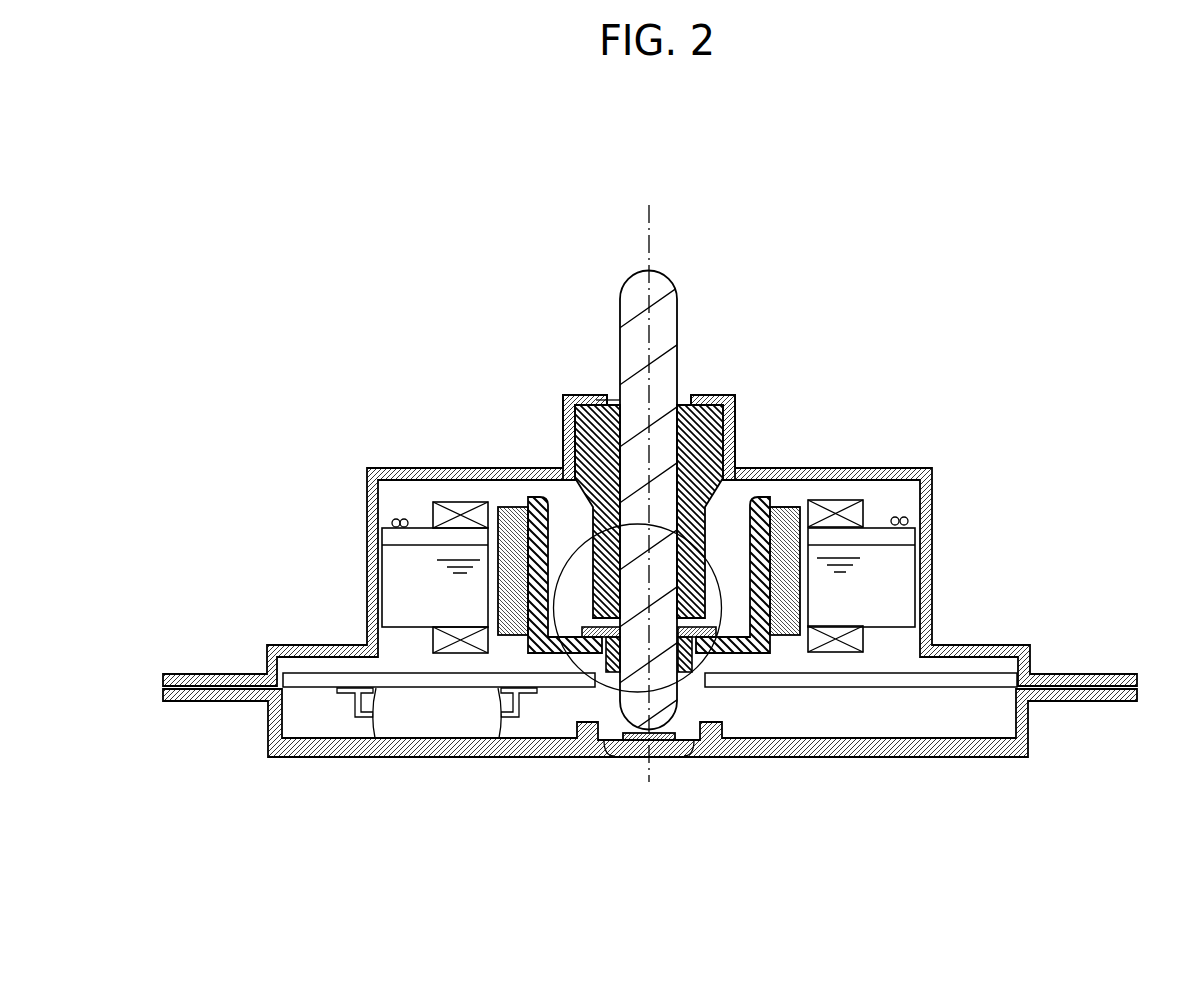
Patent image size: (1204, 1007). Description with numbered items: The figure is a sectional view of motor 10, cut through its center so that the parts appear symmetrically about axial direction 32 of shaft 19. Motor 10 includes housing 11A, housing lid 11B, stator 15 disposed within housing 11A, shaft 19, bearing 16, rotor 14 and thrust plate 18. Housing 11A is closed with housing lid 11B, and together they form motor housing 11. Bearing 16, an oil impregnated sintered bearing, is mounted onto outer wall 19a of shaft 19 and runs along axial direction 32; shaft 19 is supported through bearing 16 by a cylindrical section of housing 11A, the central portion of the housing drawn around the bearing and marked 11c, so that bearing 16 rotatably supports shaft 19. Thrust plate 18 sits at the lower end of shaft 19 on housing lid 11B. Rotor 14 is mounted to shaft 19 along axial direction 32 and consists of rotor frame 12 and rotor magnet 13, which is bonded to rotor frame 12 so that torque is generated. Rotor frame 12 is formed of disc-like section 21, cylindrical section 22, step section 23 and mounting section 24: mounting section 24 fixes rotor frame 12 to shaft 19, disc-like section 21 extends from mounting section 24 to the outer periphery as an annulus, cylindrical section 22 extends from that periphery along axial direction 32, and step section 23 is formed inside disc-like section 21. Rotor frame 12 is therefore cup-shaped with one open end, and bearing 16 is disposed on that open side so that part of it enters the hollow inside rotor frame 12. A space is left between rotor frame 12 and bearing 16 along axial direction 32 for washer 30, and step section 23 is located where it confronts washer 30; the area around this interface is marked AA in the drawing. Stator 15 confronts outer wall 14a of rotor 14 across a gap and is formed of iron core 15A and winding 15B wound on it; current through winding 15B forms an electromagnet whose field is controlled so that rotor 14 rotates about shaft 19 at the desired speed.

The motor 10 is at (298, 630).
The motor housing 11 is at (1147, 562).
The housing 11A is at (1023, 642).
The housing lid 11B is at (1103, 697).
The bearing holder portion 11c is at (735, 442).
The rotor frame 12 is at (757, 652).
The rotor magnet 13 is at (788, 625).
The rotor 14 is at (782, 815).
The outer wall of rotor 14a is at (802, 520).
The stator 15 is at (272, 378).
The iron core 15A is at (392, 550).
The winding 15B is at (478, 518).
The bearing 16 is at (568, 400).
The thrust plate 18 is at (658, 740).
The shaft 19 is at (627, 305).
The outer wall of shaft 19a is at (597, 400).
The disc-like section 21 is at (553, 640).
The cylindrical section 22 is at (519, 555).
The step section 23 is at (600, 632).
The mounting section 24 is at (614, 660).
The washer 30 is at (597, 622).
The axial direction 32 is at (651, 250).
The enlarged region AA is at (737, 405).